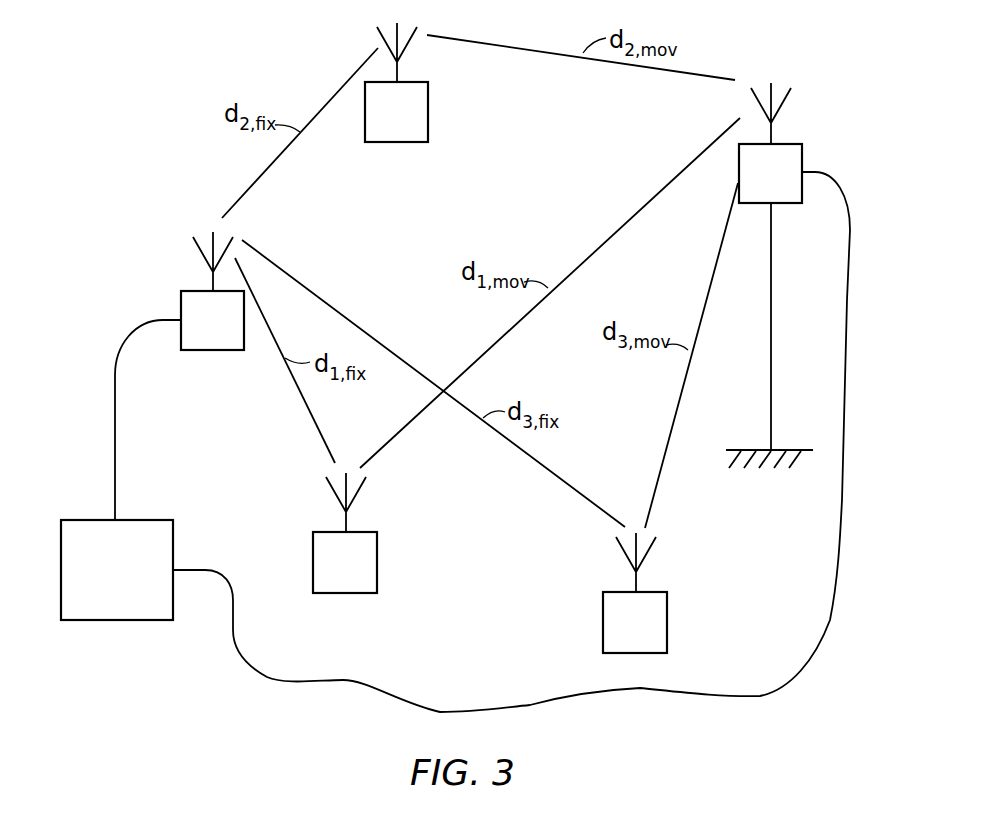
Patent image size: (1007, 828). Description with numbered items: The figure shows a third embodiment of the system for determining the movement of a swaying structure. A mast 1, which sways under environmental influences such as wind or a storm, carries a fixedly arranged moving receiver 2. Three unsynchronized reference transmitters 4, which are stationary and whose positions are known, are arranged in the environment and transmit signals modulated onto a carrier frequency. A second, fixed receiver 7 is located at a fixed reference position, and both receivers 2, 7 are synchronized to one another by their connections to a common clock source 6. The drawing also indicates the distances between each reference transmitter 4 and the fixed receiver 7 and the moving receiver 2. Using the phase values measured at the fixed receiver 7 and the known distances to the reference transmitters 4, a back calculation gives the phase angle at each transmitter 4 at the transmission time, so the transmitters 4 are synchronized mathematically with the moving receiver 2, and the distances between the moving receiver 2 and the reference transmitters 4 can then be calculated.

The mast 1 is at (771, 325).
The receiver 2 is at (802, 160).
The reference transmitter 4 is at (397, 142).
The clock source 6 is at (95, 520).
The fixed receiver 7 is at (213, 350).